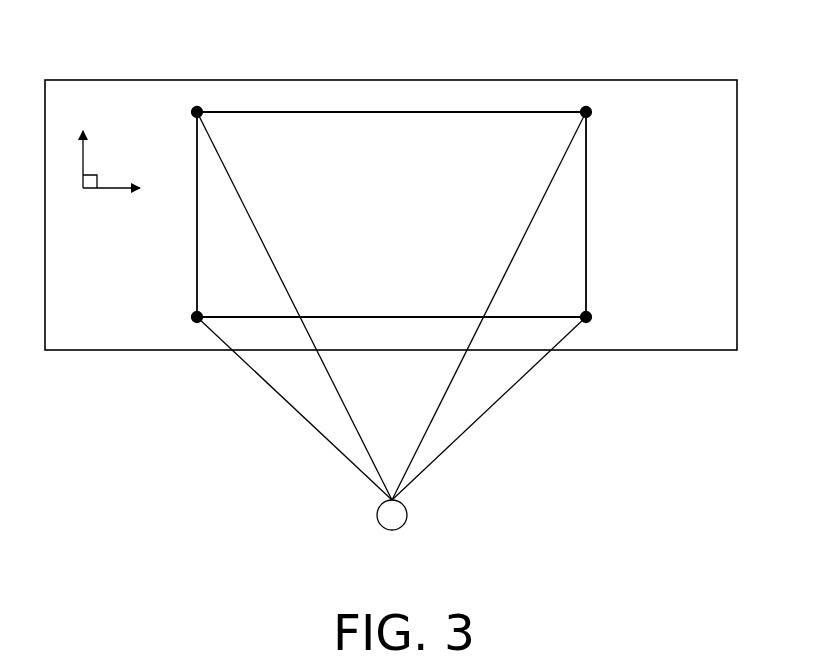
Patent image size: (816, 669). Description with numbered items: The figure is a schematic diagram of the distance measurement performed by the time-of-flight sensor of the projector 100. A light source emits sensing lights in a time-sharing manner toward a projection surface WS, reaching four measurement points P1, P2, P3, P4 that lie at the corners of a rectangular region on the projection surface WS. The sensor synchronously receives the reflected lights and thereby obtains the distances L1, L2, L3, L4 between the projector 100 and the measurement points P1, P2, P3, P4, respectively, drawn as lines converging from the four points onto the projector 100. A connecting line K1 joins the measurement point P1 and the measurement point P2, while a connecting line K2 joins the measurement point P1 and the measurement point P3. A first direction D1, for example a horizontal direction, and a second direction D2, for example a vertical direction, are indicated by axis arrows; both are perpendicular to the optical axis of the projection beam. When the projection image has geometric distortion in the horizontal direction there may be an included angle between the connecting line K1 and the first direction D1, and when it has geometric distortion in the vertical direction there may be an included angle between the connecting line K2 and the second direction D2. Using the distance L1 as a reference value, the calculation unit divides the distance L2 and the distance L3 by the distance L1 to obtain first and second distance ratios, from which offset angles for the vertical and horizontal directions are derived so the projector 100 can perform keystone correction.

The projection surface WS is at (684, 104).
The connecting line K1 is at (441, 110).
The connecting line K2 is at (196, 256).
The measurement point P1 is at (198, 106).
The measurement point P2 is at (587, 106).
The measurement point P3 is at (198, 323).
The measurement point P4 is at (587, 323).
The distance L1 is at (253, 219).
The distance L2 is at (530, 223).
The distance L3 is at (293, 409).
The distance L4 is at (487, 411).
The projector 100 is at (407, 515).
The first direction D1 is at (127, 190).
The second direction D2 is at (83, 142).